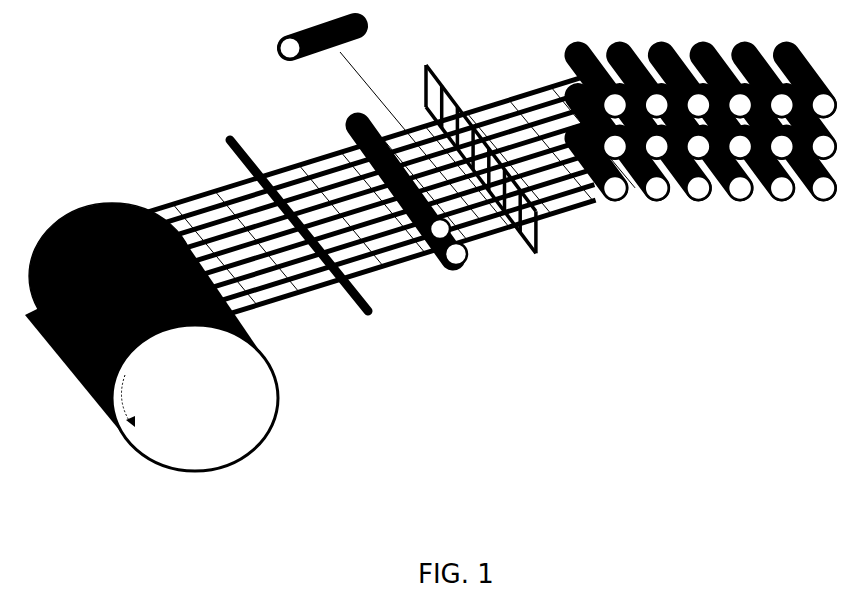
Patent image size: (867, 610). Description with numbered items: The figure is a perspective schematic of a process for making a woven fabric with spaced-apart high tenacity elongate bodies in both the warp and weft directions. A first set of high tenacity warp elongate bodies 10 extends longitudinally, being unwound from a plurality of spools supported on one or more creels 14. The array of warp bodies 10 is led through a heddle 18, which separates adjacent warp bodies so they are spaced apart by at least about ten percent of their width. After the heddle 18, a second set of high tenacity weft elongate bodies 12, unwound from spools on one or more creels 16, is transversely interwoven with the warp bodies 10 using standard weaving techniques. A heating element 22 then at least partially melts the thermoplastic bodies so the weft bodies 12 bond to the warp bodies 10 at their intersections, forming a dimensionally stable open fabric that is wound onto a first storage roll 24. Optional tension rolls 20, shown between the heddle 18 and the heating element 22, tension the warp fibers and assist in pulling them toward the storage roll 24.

The high tenacity warp elongate bodies 10 is at (212, 186).
The high tenacity weft elongate bodies 12 is at (334, 86).
The creels 14 is at (655, 222).
The creels 16 is at (253, 43).
The heddle 18 is at (531, 252).
The tension rolls 20 is at (462, 275).
The heating element 22 is at (331, 302).
The first storage roll 24 is at (213, 407).